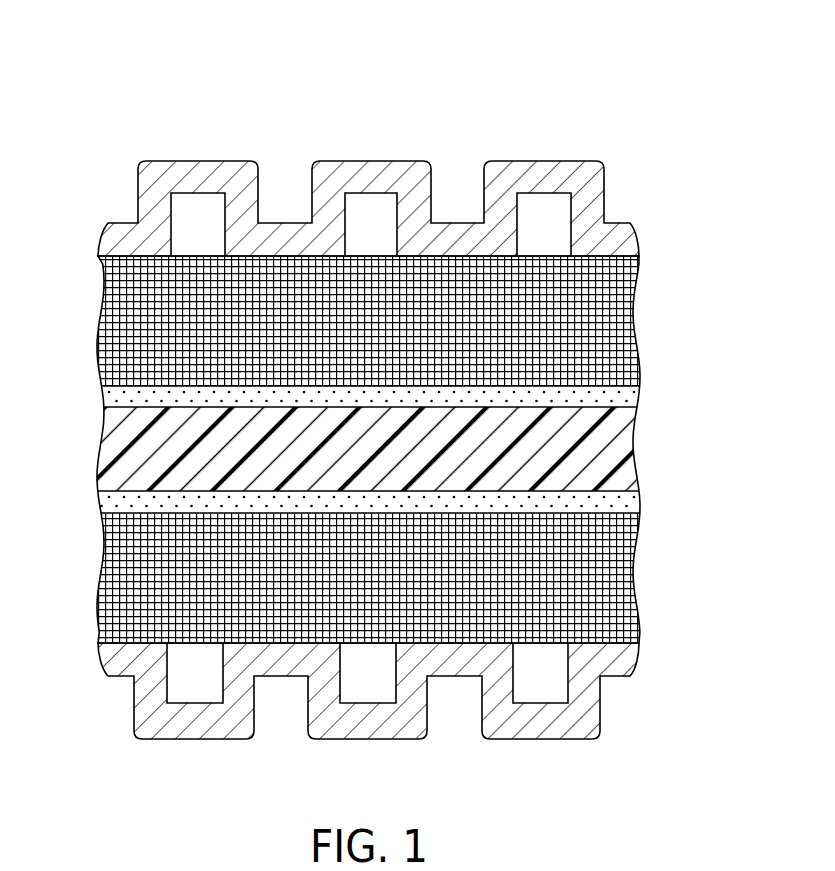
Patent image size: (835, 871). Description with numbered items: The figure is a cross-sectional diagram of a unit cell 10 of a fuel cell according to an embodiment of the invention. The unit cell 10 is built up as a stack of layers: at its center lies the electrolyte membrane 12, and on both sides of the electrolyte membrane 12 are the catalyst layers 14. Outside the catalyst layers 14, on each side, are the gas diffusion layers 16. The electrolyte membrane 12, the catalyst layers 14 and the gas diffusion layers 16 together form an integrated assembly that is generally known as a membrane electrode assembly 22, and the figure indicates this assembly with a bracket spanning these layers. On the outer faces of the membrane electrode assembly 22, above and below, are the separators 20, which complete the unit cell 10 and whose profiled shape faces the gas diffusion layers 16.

The unit cell 10 is at (100, 116).
The electrolyte membrane 12 is at (620, 446).
The catalyst layers 14 is at (632, 391).
The gas diffusion layers 16 is at (620, 316).
The separators 20 is at (597, 189).
The membrane electrode assembly 22 is at (732, 305).